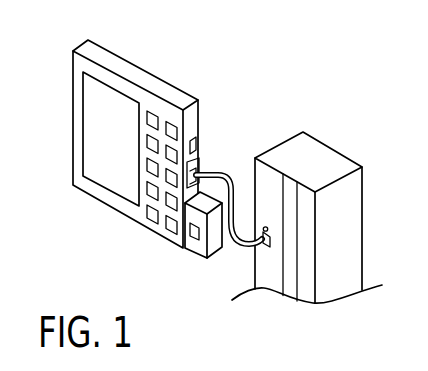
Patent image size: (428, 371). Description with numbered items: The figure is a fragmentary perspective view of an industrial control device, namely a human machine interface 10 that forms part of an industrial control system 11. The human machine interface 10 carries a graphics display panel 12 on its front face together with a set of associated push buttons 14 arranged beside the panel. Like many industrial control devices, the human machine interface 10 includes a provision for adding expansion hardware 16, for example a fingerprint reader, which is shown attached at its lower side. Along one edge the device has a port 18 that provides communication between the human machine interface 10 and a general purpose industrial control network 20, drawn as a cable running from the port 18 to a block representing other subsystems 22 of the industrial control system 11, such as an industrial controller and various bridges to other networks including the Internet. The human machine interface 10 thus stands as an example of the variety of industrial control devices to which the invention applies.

The human machine interface 10 is at (139, 52).
The industrial control system 11 is at (234, 62).
The graphics display panel 12 is at (113, 160).
The push buttons 14 is at (170, 130).
The expansion hardware 16 is at (215, 250).
The port 18 is at (195, 167).
The industrial control network 20 is at (229, 177).
The other subsystems 22 is at (303, 162).